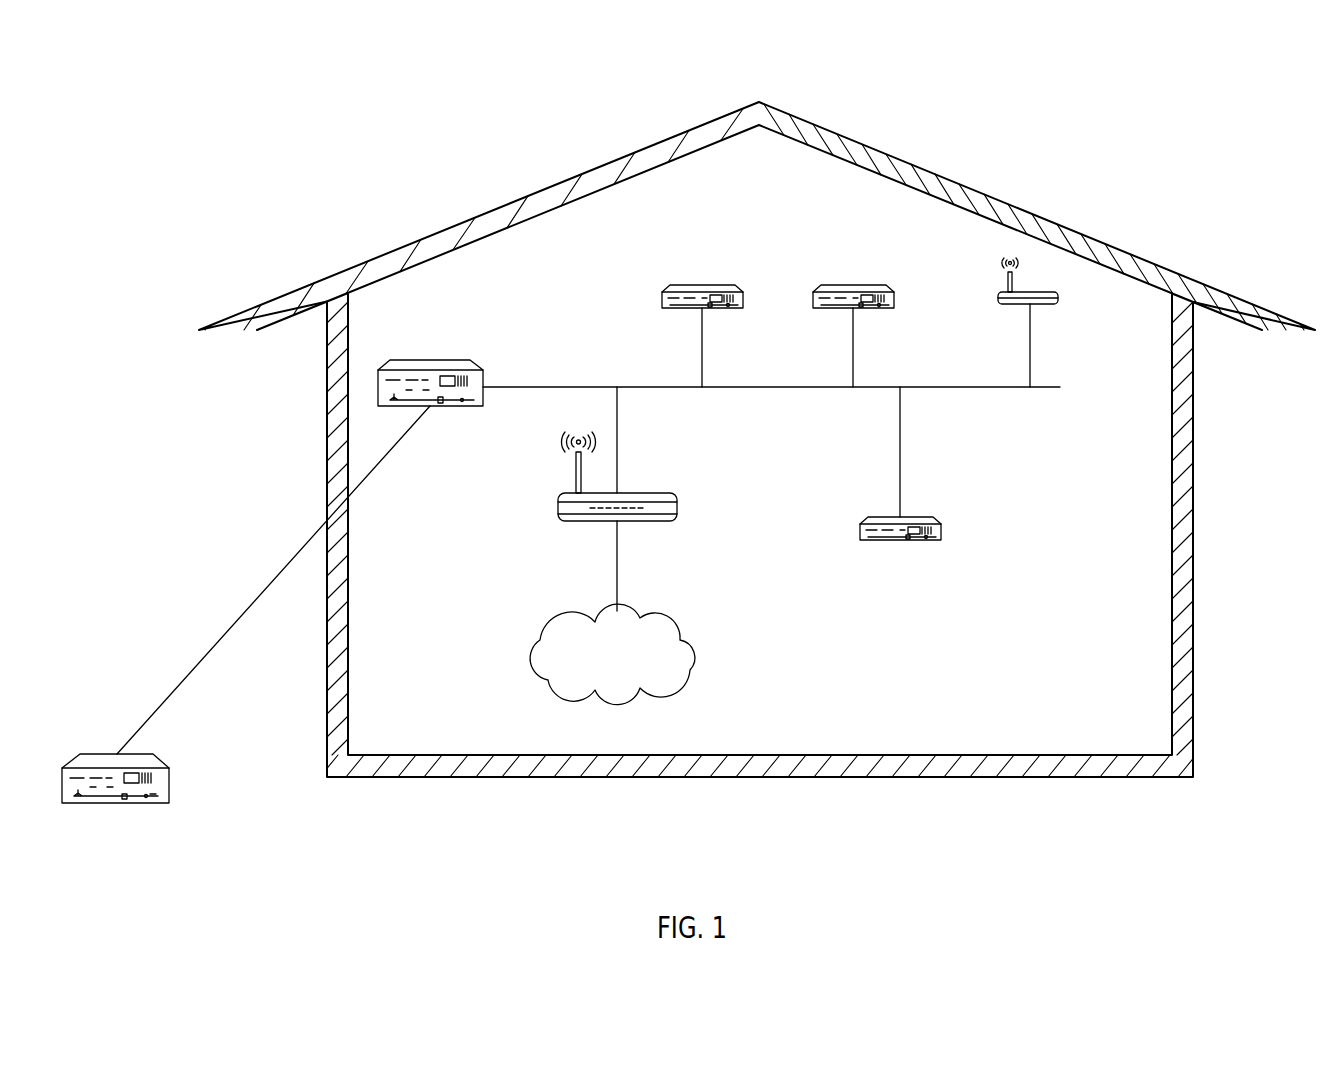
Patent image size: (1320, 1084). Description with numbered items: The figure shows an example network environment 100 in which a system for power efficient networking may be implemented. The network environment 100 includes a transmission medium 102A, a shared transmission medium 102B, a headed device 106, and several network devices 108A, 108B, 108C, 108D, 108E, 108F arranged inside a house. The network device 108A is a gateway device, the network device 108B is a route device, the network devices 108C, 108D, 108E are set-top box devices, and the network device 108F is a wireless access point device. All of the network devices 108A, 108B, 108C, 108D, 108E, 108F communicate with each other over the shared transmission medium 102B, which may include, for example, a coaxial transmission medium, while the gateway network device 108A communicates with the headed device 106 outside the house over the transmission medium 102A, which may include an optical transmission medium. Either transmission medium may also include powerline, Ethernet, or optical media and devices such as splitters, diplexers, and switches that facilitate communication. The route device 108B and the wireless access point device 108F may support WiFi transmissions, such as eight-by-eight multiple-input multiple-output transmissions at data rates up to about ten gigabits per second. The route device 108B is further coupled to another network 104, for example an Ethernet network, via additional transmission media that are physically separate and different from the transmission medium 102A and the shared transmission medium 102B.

The network environment 100 is at (1244, 105).
The transmission medium 102A is at (260, 593).
The shared transmission medium 102B is at (745, 387).
The network 104 is at (580, 613).
The headed device 106 is at (170, 782).
The network device 108A is at (430, 358).
The network device 108B is at (645, 493).
The network device 108C is at (702, 285).
The network device 108D is at (853, 285).
The network device 108E is at (917, 517).
The network device 108F is at (1063, 293).